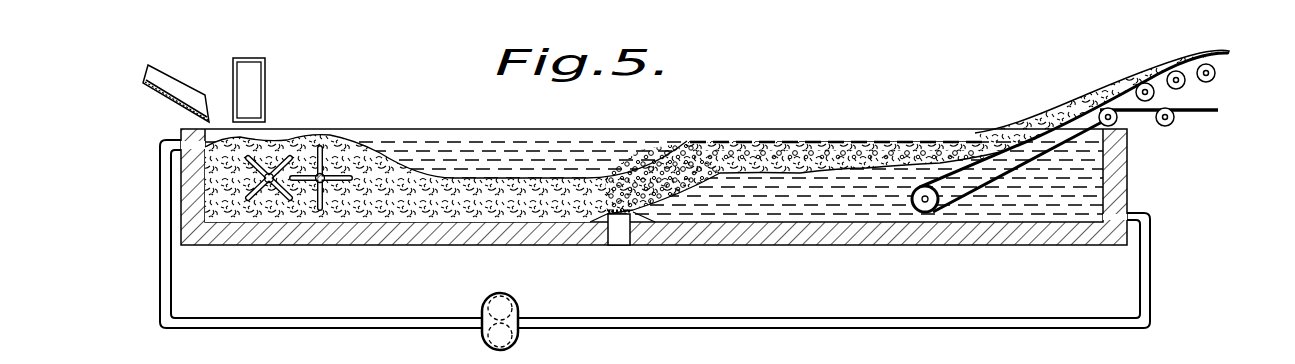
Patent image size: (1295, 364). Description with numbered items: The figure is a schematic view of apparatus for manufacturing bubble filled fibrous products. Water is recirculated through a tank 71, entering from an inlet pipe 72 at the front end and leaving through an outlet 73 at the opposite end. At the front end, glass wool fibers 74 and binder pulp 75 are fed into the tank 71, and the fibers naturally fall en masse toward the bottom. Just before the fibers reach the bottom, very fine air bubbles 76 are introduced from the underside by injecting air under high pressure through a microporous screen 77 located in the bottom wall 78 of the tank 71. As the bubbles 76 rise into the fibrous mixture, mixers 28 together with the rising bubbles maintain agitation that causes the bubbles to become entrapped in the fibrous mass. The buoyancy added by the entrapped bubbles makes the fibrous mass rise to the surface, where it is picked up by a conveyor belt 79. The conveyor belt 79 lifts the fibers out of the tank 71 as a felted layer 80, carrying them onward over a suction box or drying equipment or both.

The mixer 28 is at (323, 176).
The tank 71 is at (957, 236).
The inlet pipe 72 is at (161, 270).
The outlet 73 is at (1142, 212).
The glass wool fibers 74 is at (163, 80).
The binder pulp 75 is at (246, 82).
The air bubbles 76 is at (650, 177).
The microporous screen 77 is at (640, 226).
The bottom wall 78 is at (538, 226).
The conveyor belt 79 is at (1025, 170).
The felted layer 80 is at (1053, 112).